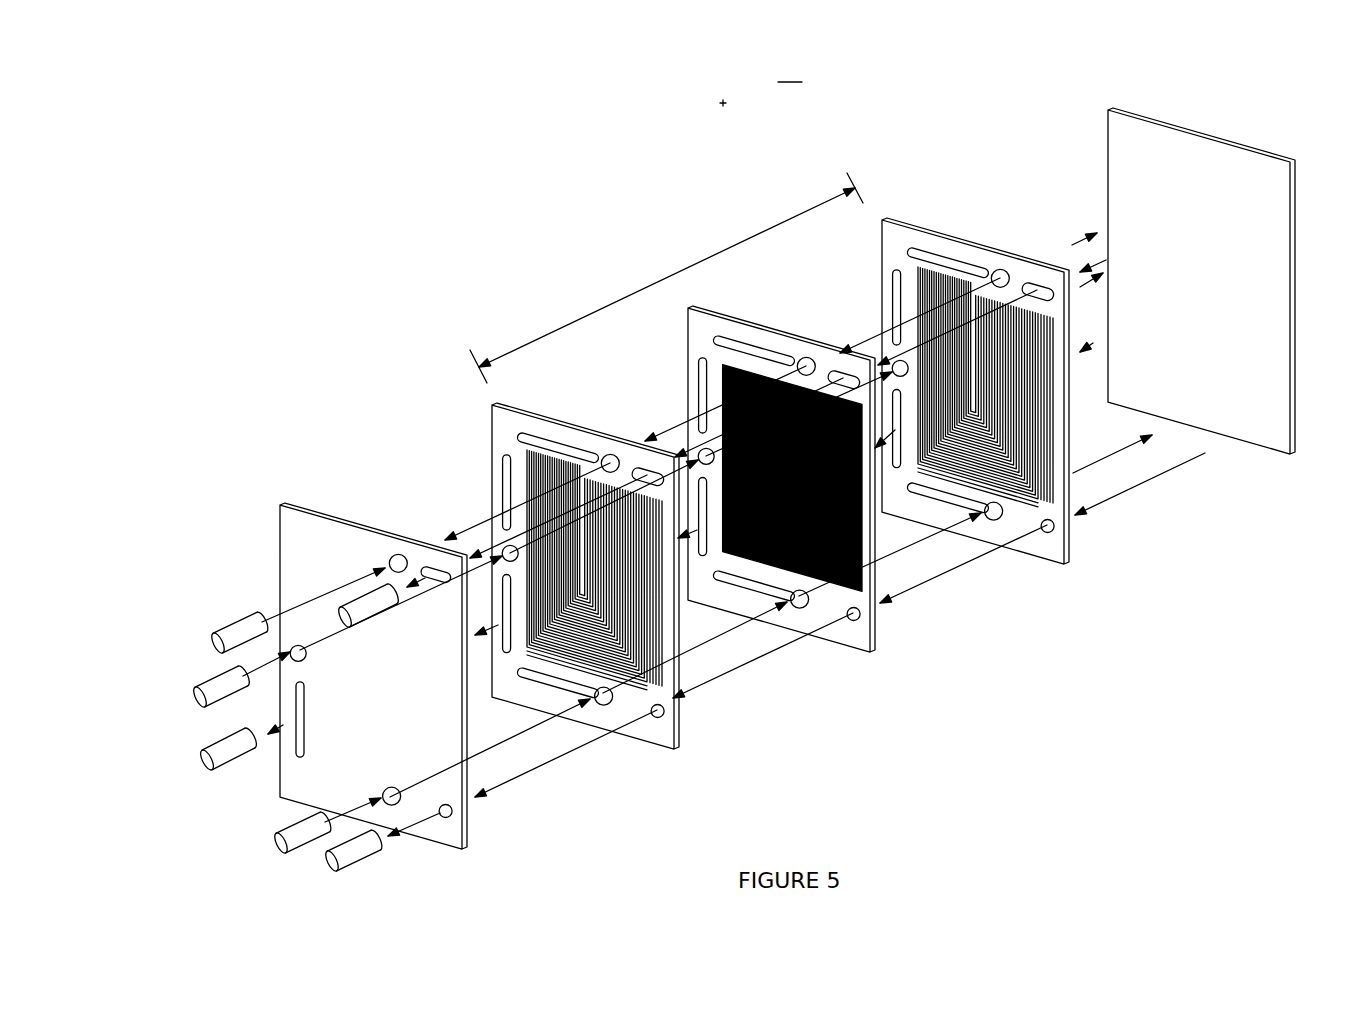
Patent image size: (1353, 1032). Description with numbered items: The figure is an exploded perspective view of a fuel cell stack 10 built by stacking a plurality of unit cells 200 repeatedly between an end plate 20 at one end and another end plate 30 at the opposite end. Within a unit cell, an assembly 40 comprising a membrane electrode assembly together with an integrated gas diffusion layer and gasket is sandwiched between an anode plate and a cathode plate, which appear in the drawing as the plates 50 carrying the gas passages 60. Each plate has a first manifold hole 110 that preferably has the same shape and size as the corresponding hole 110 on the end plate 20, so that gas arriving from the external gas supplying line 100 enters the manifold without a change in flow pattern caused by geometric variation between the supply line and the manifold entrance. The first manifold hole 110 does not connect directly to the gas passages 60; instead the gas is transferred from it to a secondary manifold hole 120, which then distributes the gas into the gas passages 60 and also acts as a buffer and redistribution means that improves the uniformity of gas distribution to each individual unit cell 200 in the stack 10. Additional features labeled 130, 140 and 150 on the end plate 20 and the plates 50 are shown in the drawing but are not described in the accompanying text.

The fuel cell stack 10 is at (730, 96).
The end plate 20 is at (462, 851).
The end plate 30 is at (1278, 462).
The membrane electrode assembly with integrated GDL and gasket 40 is at (875, 658).
The flow field plate 50 is at (685, 754).
The gas passages 60 is at (645, 622).
The external gas supplying line 100 is at (252, 605).
The first manifold hole 110 is at (388, 542).
The secondary manifold hole 120 is at (524, 438).
The fitting 130 is at (370, 597).
The slot 140 is at (420, 547).
The outlet slots 150 is at (633, 460).
The unit cells 200 is at (666, 278).